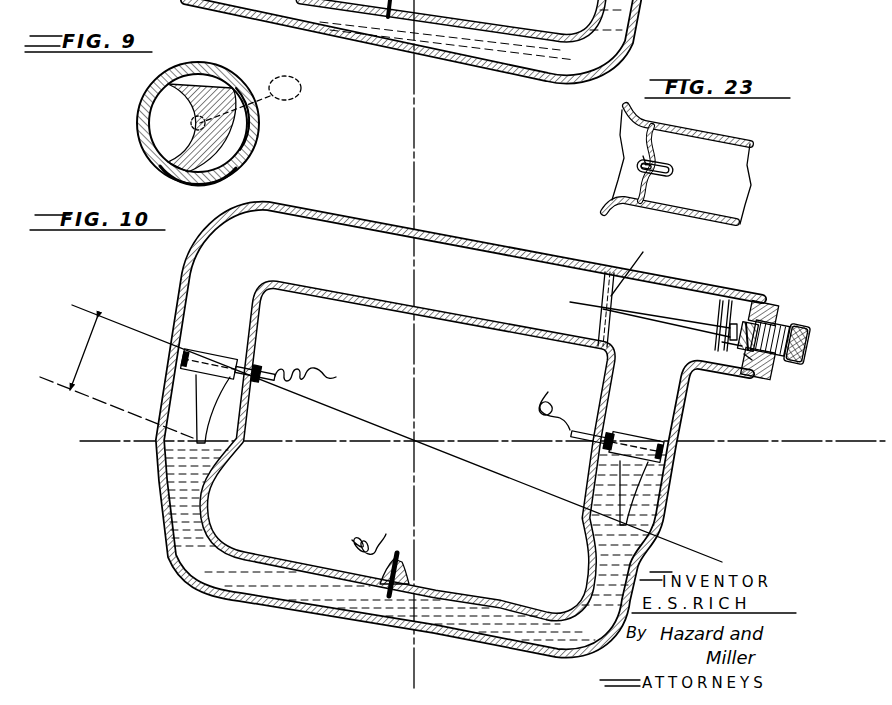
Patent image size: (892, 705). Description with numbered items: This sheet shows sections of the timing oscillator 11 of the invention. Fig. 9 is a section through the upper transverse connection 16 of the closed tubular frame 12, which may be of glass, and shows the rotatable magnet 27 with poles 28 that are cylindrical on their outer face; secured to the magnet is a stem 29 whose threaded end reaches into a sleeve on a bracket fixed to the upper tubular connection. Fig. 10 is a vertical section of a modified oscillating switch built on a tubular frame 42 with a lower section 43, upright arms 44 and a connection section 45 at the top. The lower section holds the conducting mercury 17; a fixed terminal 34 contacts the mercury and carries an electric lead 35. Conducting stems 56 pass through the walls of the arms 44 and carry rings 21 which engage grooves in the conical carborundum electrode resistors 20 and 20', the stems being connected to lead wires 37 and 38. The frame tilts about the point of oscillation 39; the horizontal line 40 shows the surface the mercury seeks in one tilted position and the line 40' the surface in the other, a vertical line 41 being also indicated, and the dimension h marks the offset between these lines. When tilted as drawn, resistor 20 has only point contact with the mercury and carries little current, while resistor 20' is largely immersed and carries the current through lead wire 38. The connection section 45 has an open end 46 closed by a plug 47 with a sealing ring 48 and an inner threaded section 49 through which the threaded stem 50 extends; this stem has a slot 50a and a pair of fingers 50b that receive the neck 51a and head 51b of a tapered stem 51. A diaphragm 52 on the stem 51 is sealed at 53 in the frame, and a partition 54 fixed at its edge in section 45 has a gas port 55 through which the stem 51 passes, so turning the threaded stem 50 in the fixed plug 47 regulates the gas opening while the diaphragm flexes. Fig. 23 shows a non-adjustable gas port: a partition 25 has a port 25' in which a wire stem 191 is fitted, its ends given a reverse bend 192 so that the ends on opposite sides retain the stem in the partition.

In FIG. 9, the timing oscillator 11 is at (130, 128).
In FIG. 9, the closed tubular frame 12 is at (650, 24).
In FIG. 9, the cross or transverse connection 16 is at (262, 131).
In FIG. 9, the conducting medium (mercury) 17 is at (470, 47).
In FIG. 9, the rotatable magnet 27 is at (163, 165).
In FIG. 9, the magnet poles 28 is at (208, 78).
In FIG. 9, the stem 29 is at (250, 99).
In FIG. 23, the partition 25 is at (677, 163).
In FIG. 23, the port 25' is at (615, 147).
In FIG. 23, the wire stem 191 is at (668, 168).
In FIG. 23, the reverse bend 192 is at (640, 170).
In FIG. 10, the electrode resistor 20 is at (170, 409).
In FIG. 10, the electrode resistor 20' is at (681, 493).
In FIG. 10, the ring 21 is at (186, 360).
In FIG. 10, the fixed terminal 34 is at (408, 570).
In FIG. 10, the electric lead 35 is at (372, 528).
In FIG. 10, the lead wire 37 is at (317, 376).
In FIG. 10, the lead wire 38 is at (552, 398).
In FIG. 10, the point of oscillation 39 is at (416, 440).
In FIG. 10, the horizontal line 40 is at (342, 463).
In FIG. 10, the horizontal line 40' is at (381, 433).
In FIG. 10, the vertical line 41 is at (415, 357).
In FIG. 10, the tubular frame 42 is at (690, 535).
In FIG. 10, the lower section 43 is at (300, 566).
In FIG. 10, the upright arms 44 is at (183, 318).
In FIG. 10, the connection section 45 is at (480, 236).
In FIG. 10, the open end 46 is at (766, 302).
In FIG. 10, the plug 47 is at (781, 370).
In FIG. 10, the sealing ring 48 is at (763, 374).
In FIG. 10, the inner threaded section 49 is at (742, 352).
In FIG. 10, the threaded stem 50 is at (780, 323).
In FIG. 10, the slot 50a is at (742, 358).
In FIG. 10, the fingers 50b is at (730, 334).
In FIG. 10, the tapered stem 51 is at (674, 320).
In FIG. 10, the neck 51a is at (744, 340).
In FIG. 10, the head 51b is at (730, 345).
In FIG. 10, the diaphragm 52 is at (719, 303).
In FIG. 10, the seal 53 is at (729, 300).
In FIG. 10, the partition 54 is at (607, 282).
In FIG. 10, the gas port 55 is at (638, 262).
In FIG. 10, the conducting stems 56 is at (262, 368).
In FIG. 10, the height offset h is at (76, 354).